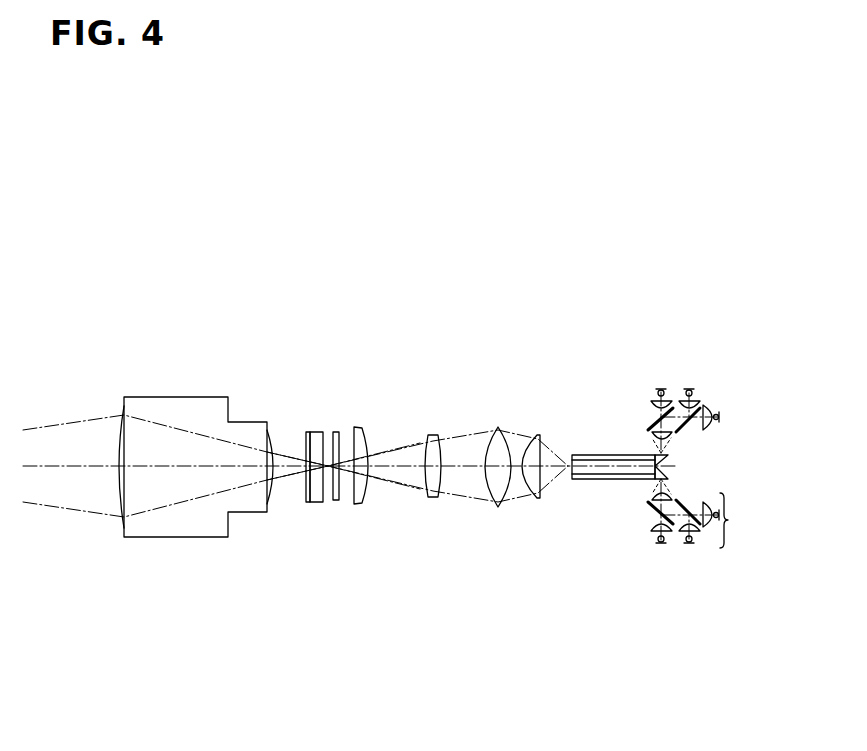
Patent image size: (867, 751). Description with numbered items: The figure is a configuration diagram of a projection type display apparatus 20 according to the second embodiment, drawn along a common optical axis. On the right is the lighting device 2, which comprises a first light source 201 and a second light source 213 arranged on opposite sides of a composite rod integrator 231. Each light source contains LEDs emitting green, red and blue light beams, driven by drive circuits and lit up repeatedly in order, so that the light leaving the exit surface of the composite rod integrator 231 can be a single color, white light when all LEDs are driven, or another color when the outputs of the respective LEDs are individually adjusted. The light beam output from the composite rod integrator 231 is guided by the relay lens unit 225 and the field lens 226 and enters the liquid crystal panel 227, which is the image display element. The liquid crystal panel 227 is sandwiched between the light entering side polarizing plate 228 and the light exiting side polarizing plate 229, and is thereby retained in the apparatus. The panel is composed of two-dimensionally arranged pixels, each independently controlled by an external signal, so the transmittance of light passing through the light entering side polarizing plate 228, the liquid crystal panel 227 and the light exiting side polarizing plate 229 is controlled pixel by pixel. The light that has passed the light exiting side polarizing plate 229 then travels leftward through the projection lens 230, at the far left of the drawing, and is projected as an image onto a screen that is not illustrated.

The projection type display apparatus 20 is at (142, 212).
The projection lens 230 is at (157, 403).
The light exiting side polarizing plate 229 is at (305, 445).
The liquid crystal panel 227 is at (320, 434).
The light entering side polarizing plate 228 is at (335, 434).
The field lens 226 is at (362, 436).
The relay lens unit 225 is at (555, 409).
The composite rod integrator 231 is at (628, 468).
The first light source 201 is at (720, 384).
The second light source 213 is at (719, 513).
The lighting device 2 is at (677, 484).